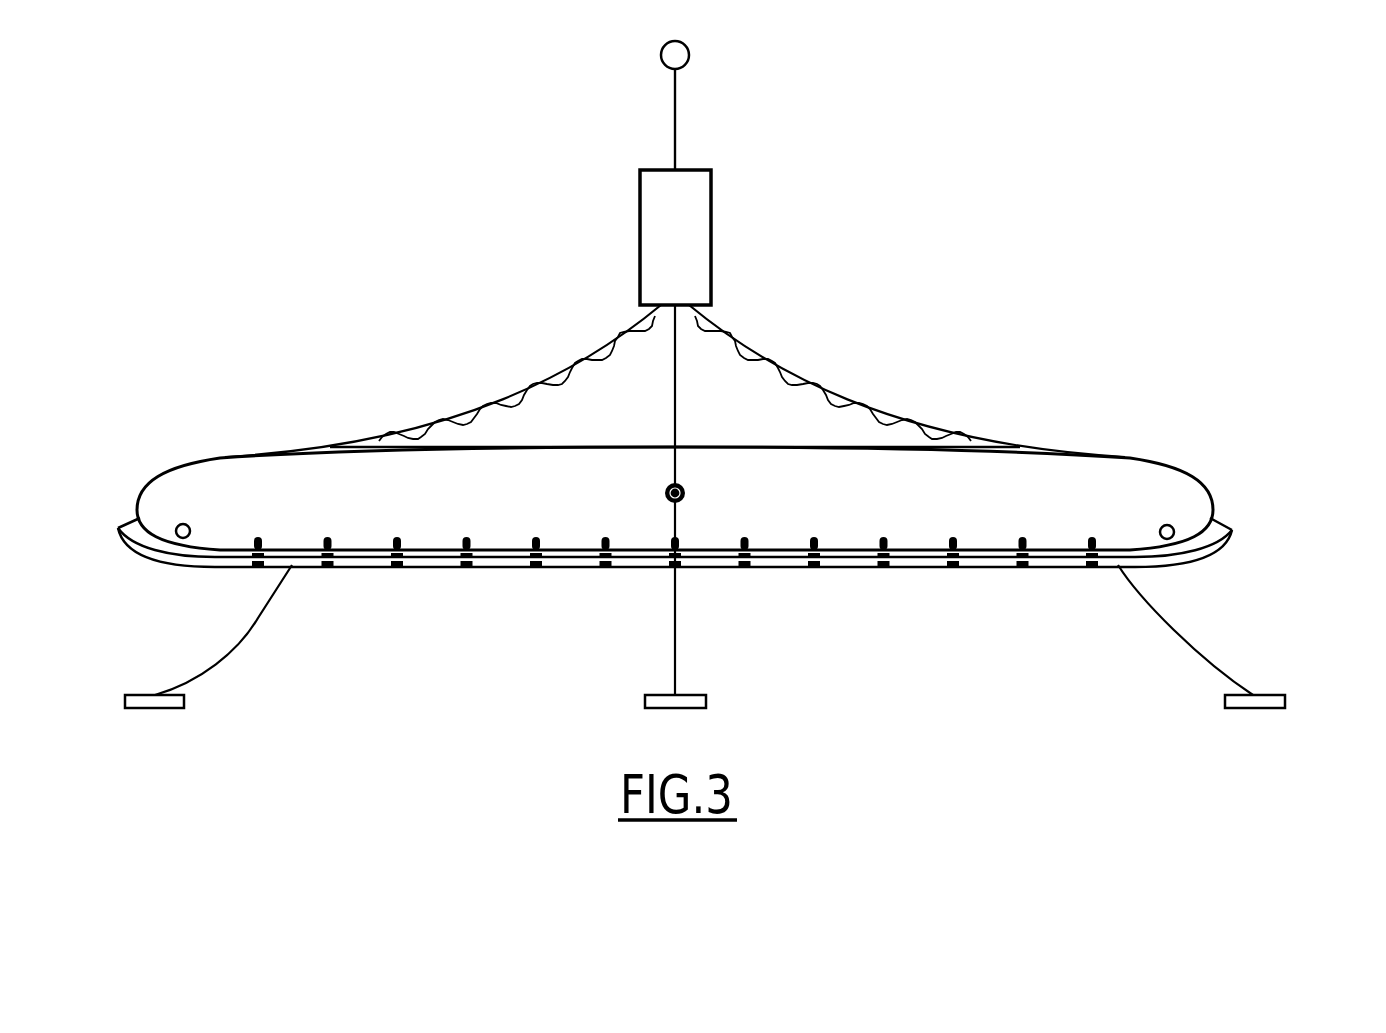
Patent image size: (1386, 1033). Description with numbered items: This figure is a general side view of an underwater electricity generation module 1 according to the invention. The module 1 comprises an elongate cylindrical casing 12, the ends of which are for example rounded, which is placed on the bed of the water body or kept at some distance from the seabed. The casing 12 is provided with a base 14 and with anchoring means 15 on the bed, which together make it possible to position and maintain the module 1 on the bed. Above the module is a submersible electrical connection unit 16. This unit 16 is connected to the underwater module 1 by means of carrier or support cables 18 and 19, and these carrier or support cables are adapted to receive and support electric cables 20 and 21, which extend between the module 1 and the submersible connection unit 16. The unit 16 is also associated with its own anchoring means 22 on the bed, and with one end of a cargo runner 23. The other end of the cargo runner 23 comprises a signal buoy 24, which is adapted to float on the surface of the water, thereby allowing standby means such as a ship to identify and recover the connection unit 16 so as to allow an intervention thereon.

The underwater electricity generation module 1 is at (740, 374).
The elongate cylindrical casing 12 is at (1137, 455).
The base 14 is at (1212, 567).
The anchoring means 15 is at (1292, 693).
The submersible electrical connection unit 16 is at (628, 226).
The carrier or support cable 18 is at (542, 376).
The carrier or support cable 19 is at (812, 386).
The electric cable 20 is at (548, 407).
The electric cable 21 is at (791, 397).
The anchoring means 22 is at (708, 686).
The cargo runner 23 is at (672, 121).
The signal buoy 24 is at (657, 64).